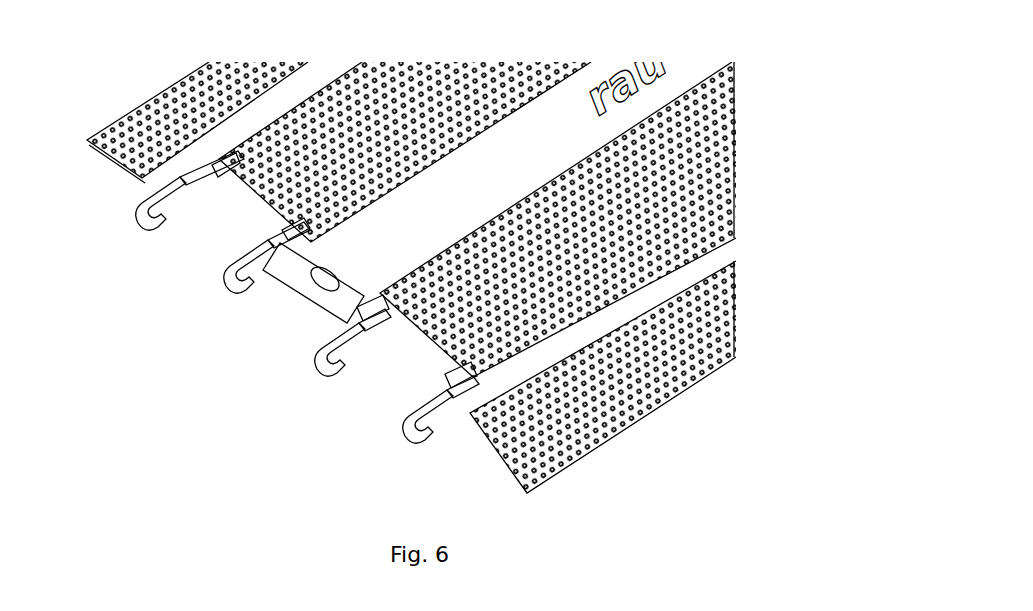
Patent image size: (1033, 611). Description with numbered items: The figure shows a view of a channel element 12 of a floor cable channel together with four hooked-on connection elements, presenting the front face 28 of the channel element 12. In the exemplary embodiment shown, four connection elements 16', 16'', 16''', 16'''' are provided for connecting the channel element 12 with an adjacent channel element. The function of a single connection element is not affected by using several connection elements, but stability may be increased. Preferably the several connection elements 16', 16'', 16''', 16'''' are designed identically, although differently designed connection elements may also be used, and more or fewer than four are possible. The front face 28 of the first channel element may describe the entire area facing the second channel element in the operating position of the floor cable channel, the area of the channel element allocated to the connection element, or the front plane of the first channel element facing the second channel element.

The channel element 12 is at (137, 120).
The connection element 16' is at (190, 234).
The connection element 16'' is at (294, 299).
The connection element 16''' is at (353, 371).
The connection element 16'''' is at (441, 433).
The front face 28 is at (193, 400).